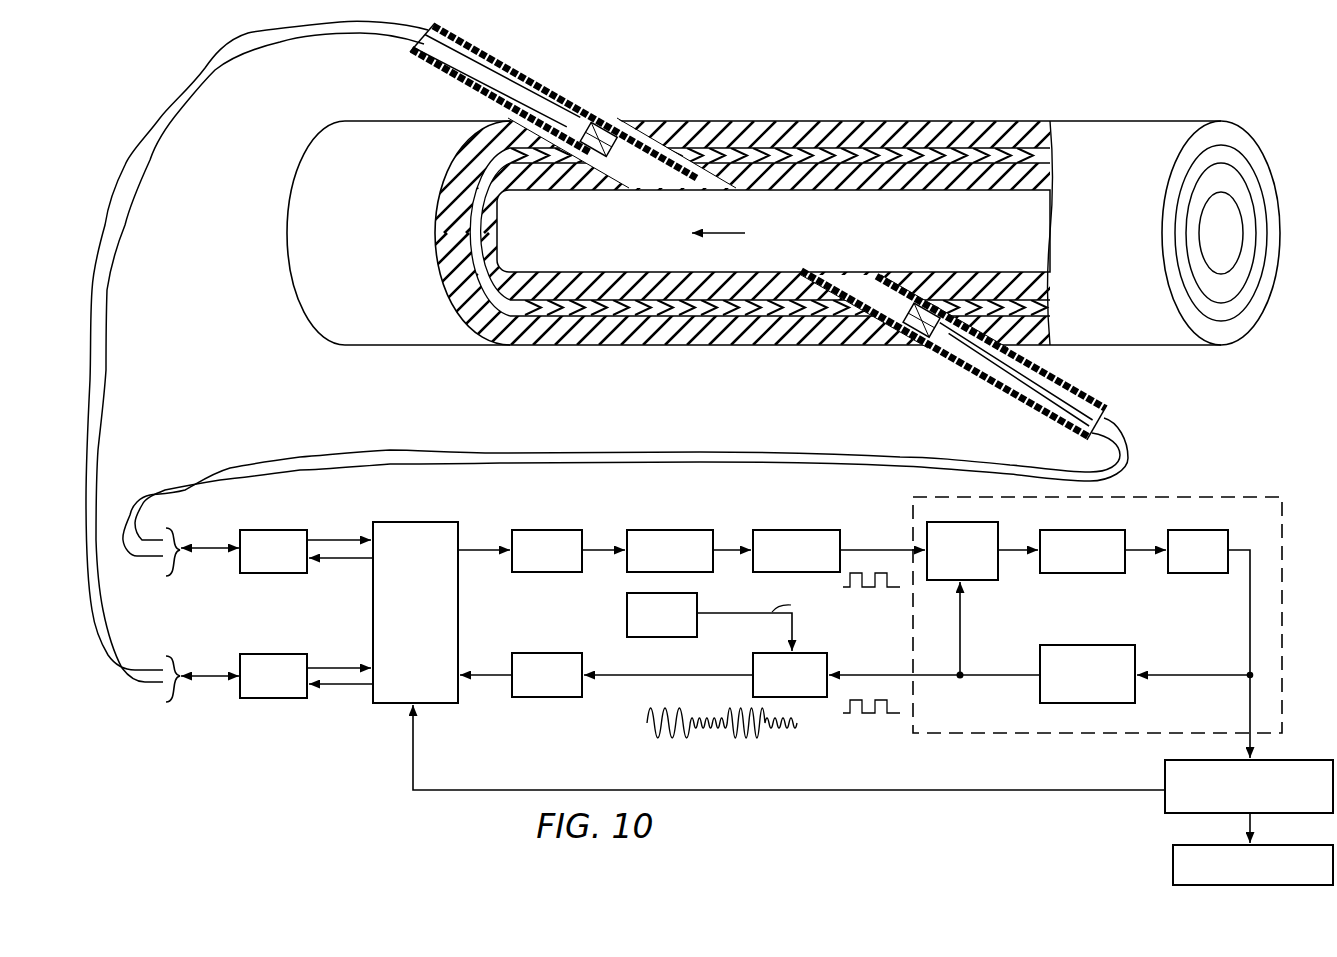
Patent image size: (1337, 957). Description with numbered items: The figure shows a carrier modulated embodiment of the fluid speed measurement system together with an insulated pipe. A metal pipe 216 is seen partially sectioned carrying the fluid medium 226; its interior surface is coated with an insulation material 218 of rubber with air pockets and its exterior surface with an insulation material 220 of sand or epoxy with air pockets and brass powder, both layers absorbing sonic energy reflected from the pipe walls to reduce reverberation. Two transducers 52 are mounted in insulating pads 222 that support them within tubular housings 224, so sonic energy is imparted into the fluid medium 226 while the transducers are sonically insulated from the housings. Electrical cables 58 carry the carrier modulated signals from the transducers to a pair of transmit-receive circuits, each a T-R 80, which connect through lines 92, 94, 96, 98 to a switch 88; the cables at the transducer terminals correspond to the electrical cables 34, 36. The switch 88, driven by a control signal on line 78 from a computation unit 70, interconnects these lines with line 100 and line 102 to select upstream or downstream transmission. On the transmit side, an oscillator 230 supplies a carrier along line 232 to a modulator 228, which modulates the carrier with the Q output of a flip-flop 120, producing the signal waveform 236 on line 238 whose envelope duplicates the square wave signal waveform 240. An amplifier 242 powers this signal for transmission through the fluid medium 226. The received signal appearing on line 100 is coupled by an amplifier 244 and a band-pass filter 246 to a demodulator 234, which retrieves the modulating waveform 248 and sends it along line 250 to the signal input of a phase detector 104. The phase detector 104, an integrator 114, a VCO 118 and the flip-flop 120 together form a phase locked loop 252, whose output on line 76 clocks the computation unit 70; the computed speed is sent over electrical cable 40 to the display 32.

The display 32 is at (1172, 857).
The electrical cable 34 is at (197, 551).
The electrical cable 36 is at (214, 678).
The electrical cable 40 is at (1257, 832).
The transducer 52 is at (600, 124).
The transducer cable 58 is at (227, 52).
The computation unit 70 is at (1165, 771).
The line 76 is at (1256, 748).
The line 78 is at (832, 791).
The transmit-receive circuit 80 is at (296, 530).
The switch 88 is at (433, 522).
The line 92 is at (336, 540).
The line 94 is at (340, 558).
The line 96 is at (352, 656).
The line 98 is at (337, 694).
The line 100 is at (474, 546).
The line 102 is at (481, 688).
The phase detector 104 is at (983, 523).
The integrator 114 is at (1093, 513).
The VCO 118 is at (1221, 527).
The flip-flop 120 is at (1121, 646).
The pipe 216 is at (1257, 240).
The insulation material 218 is at (988, 192).
The insulation material 220 is at (951, 120).
The insulating pad 222 is at (600, 160).
The tubular housing 224 is at (550, 82).
The fluid medium 226 is at (812, 228).
The modulator 228 is at (818, 656).
The oscillator 230 is at (627, 613).
The line 232 is at (764, 613).
The demodulator 234 is at (803, 530).
The signal waveform 236 is at (770, 733).
The line 238 is at (666, 673).
The signal waveform 240 is at (870, 704).
The amplifier 242 is at (548, 651).
The amplifier 244 is at (560, 530).
The filter 246 is at (678, 530).
The retrieved waveform 248 is at (845, 580).
The line 250 is at (893, 548).
The phase locked loop 252 is at (1143, 493).